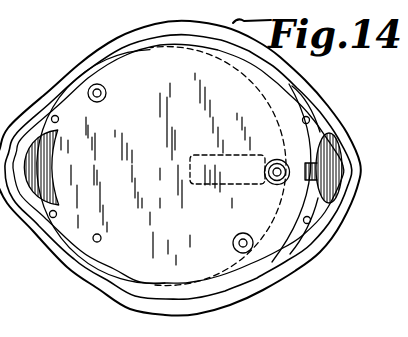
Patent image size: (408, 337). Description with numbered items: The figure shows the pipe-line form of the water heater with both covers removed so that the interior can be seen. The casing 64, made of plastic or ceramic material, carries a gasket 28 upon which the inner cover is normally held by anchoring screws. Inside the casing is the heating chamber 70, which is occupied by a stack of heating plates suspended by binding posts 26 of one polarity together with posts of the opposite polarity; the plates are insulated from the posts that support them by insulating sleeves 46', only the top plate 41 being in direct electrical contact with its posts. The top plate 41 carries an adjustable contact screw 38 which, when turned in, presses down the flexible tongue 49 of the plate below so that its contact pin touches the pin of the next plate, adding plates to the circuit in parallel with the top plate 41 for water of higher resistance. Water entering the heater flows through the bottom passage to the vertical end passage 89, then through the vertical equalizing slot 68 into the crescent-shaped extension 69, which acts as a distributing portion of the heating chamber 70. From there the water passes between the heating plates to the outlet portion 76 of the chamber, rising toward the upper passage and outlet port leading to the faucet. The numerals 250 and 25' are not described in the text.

The casing 64 is at (282, 276).
The gasket 28 is at (329, 224).
The top plate 41 is at (143, 167).
The gasket ring 250 is at (218, 166).
The gasket 25' is at (118, 225).
The flexible tongue 49 is at (251, 186).
The adjustable contact screw 38 is at (275, 160).
The binding posts 26 is at (106, 88).
The insulating sleeves 46' is at (170, 168).
The outlet portion of heating chamber 76 is at (41, 167).
The heating chamber 70 is at (57, 113).
The crescent-shaped extension 69 is at (321, 128).
The vertical equalizing slot 68 is at (325, 170).
The vertical end passage 89 is at (338, 153).